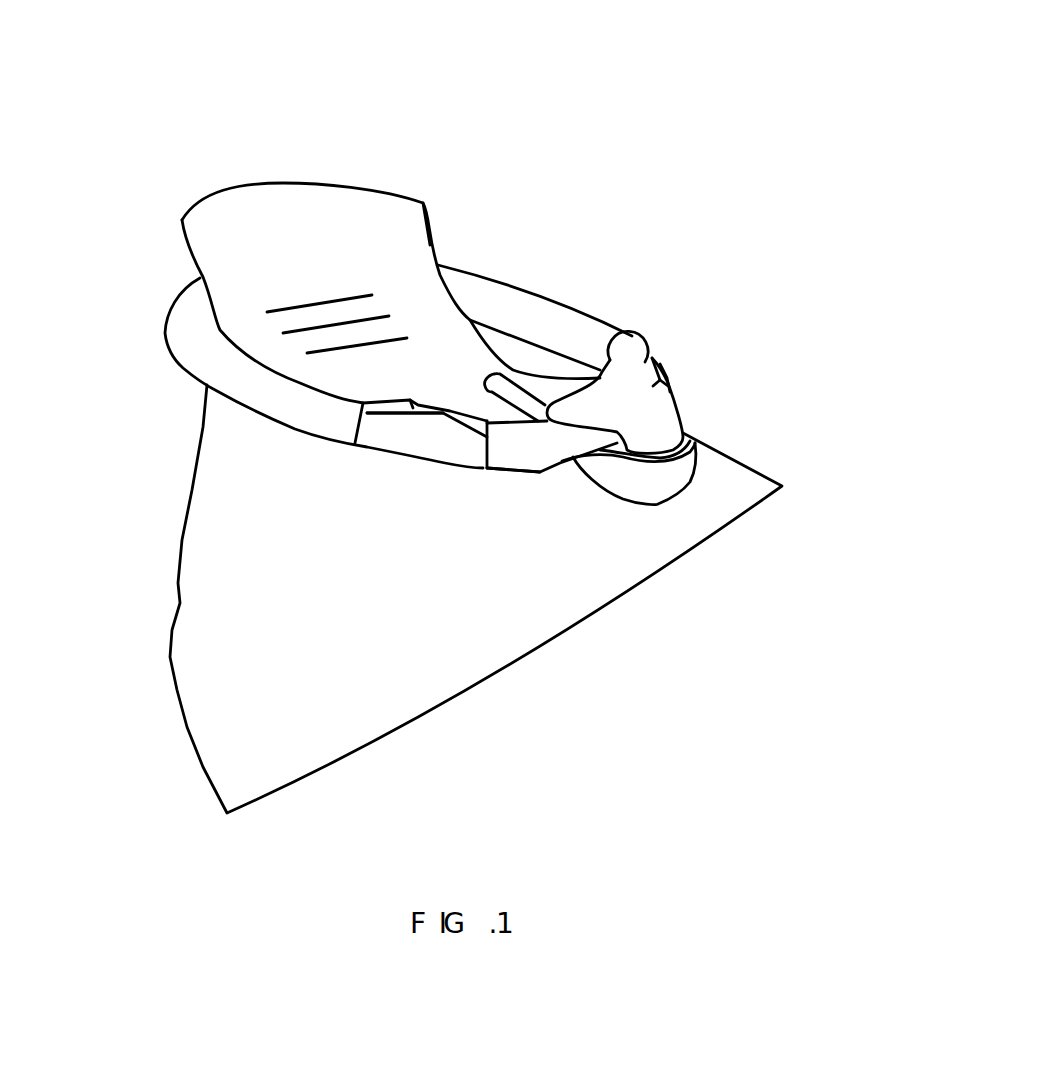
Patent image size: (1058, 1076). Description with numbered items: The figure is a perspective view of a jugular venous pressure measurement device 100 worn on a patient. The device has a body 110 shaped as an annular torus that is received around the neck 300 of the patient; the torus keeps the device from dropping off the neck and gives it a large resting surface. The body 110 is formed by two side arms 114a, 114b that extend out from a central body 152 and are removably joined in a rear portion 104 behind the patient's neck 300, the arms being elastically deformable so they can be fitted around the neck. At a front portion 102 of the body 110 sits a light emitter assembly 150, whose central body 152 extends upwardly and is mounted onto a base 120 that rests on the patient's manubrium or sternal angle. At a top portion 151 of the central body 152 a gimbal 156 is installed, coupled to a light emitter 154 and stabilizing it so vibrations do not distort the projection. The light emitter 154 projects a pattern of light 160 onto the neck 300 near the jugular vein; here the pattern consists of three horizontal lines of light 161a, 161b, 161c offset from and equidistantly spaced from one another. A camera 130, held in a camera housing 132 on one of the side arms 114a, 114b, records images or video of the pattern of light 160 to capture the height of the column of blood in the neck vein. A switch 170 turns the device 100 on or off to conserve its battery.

The JVP measurement device 100 is at (748, 168).
The front portion 102 is at (679, 511).
The rear portion 104 is at (178, 282).
The body 110 is at (497, 463).
The side arm 114a is at (530, 479).
The side arm 114b is at (523, 279).
The base 120 is at (726, 486).
The camera 130 is at (428, 395).
The camera housing 132 is at (380, 430).
The light emitter assembly 150 is at (670, 347).
The top portion 151 is at (657, 333).
The central body 152 is at (677, 393).
The light emitter 154 is at (600, 344).
The gimbal 156 is at (621, 356).
The pattern of light 160 is at (281, 305).
The line of light 161a is at (313, 301).
The line of light 161b is at (345, 315).
The line of light 161c is at (380, 335).
The switch 170 is at (661, 418).
The neck 300 is at (436, 240).